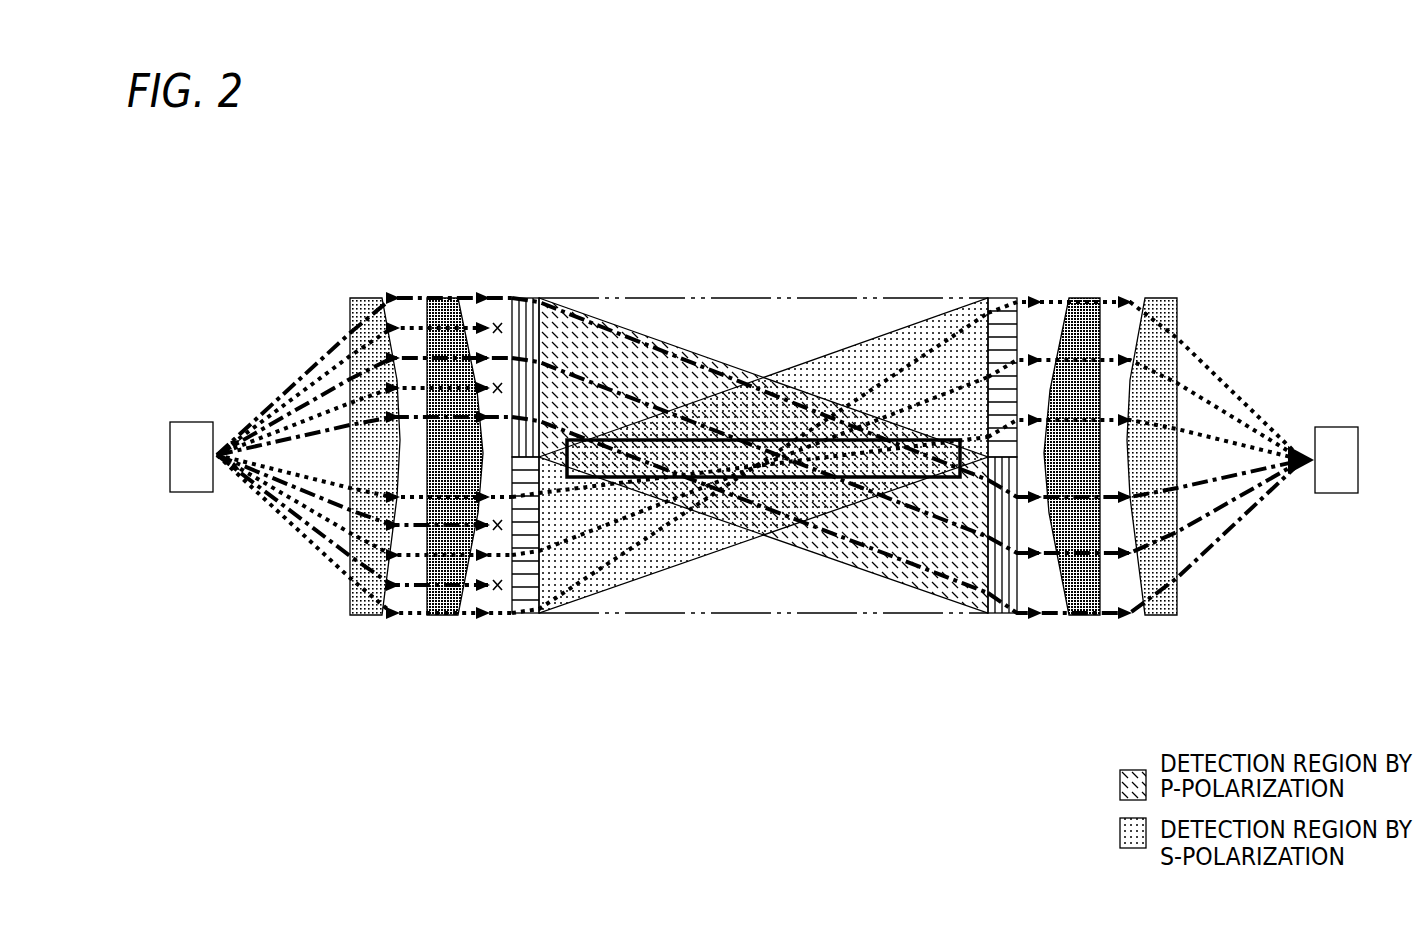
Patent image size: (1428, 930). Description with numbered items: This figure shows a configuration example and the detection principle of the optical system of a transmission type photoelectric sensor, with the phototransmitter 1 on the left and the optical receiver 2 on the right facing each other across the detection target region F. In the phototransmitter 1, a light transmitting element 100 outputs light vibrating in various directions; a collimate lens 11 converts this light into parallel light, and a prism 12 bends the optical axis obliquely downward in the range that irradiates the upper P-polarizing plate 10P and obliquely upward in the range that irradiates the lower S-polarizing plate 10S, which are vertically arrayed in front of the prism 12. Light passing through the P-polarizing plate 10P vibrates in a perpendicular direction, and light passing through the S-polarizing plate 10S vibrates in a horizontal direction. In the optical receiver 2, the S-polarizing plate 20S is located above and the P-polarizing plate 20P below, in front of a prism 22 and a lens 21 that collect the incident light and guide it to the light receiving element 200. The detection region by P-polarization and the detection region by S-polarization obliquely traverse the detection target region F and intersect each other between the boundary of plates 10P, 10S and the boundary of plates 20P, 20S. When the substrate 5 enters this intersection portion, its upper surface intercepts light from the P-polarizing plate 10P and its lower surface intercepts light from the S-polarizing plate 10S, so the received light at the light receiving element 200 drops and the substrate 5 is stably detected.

The phototransmitter 1 is at (308, 240).
The optical receiver 2 is at (1221, 233).
The substrate 5 is at (783, 480).
The collimate lens 11 is at (367, 298).
The prism 12 is at (442, 298).
The P-polarizing plate 10P is at (527, 298).
The S-polarizing plate 10S is at (523, 613).
The S-polarizing plate 20S is at (1002, 298).
The P-polarizing plate 20P is at (1002, 613).
The lens 21 is at (1162, 298).
The prism 22 is at (1087, 298).
The light transmitting element 100 is at (192, 433).
The light receiving element 200 is at (1338, 433).
The detection target region F is at (843, 298).